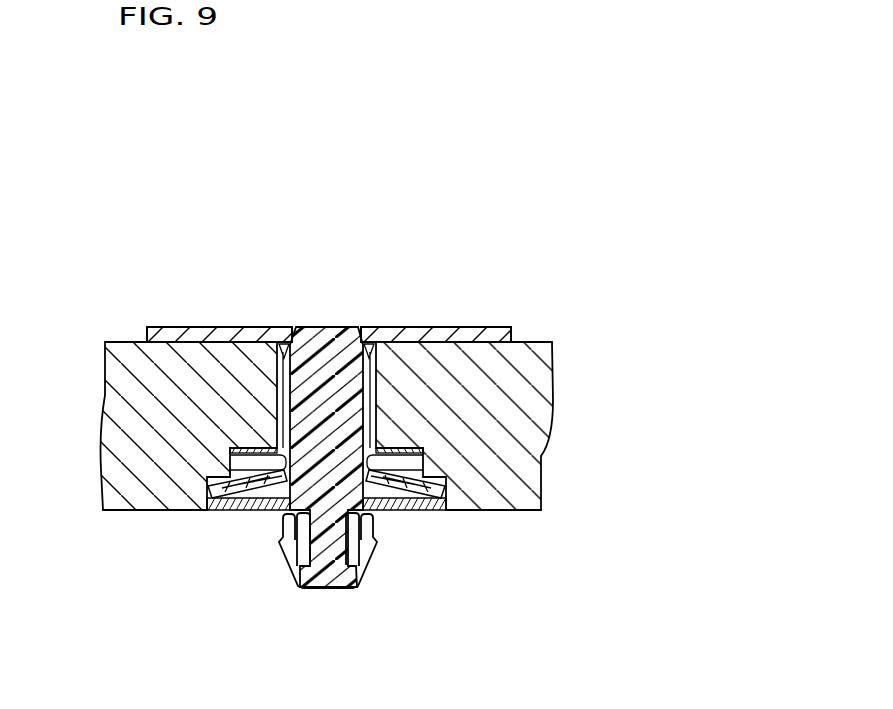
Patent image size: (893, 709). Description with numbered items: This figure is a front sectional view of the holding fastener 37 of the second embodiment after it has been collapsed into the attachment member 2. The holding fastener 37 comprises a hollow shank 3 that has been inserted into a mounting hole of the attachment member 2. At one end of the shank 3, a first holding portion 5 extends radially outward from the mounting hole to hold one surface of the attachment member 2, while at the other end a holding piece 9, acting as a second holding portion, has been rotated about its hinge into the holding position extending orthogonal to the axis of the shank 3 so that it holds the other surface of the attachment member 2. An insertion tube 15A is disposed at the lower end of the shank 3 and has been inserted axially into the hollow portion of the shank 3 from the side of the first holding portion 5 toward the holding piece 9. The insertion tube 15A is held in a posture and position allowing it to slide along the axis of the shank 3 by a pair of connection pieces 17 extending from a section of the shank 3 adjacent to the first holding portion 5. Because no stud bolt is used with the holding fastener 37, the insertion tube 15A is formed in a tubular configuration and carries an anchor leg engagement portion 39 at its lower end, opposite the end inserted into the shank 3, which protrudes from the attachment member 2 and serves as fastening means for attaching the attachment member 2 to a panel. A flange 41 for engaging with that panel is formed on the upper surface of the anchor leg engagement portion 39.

The attachment member 2 is at (518, 473).
The shank 3 is at (267, 343).
The first holding portion 5 is at (250, 450).
The holding piece 9 is at (190, 327).
The insertion tube 15A is at (330, 330).
The connection pieces 17 is at (232, 477).
The holding fastener 37 is at (354, 367).
The anchor leg engagement portion 39 is at (368, 565).
The flange 41 is at (247, 513).